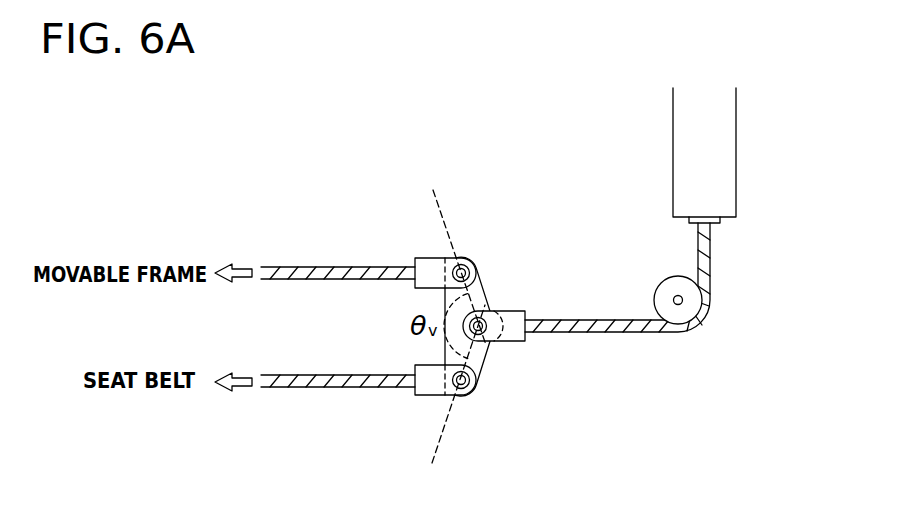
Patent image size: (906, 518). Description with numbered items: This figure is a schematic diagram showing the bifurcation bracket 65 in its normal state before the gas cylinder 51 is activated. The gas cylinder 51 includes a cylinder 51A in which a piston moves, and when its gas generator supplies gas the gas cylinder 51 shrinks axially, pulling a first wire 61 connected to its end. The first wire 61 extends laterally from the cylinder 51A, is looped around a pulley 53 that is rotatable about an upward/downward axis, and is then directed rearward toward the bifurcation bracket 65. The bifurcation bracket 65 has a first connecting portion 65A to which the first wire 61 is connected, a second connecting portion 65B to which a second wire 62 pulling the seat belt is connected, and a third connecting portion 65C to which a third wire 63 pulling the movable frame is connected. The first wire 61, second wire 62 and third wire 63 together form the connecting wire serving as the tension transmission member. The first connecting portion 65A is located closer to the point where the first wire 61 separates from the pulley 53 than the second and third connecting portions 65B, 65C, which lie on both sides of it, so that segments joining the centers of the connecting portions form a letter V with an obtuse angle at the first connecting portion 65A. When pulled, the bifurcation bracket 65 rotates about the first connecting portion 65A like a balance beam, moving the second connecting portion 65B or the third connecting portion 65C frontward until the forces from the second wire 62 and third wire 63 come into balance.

The gas cylinder 51 is at (737, 119).
The cylinder 51A is at (718, 190).
The pulley 53 is at (663, 285).
The first wire 61 is at (590, 332).
The second wire 62 is at (305, 386).
The third wire 63 is at (304, 268).
The bifurcation bracket 65 is at (488, 297).
The first connecting portion 65A is at (484, 332).
The second connecting portion 65B is at (472, 396).
The third connecting portion 65C is at (470, 263).